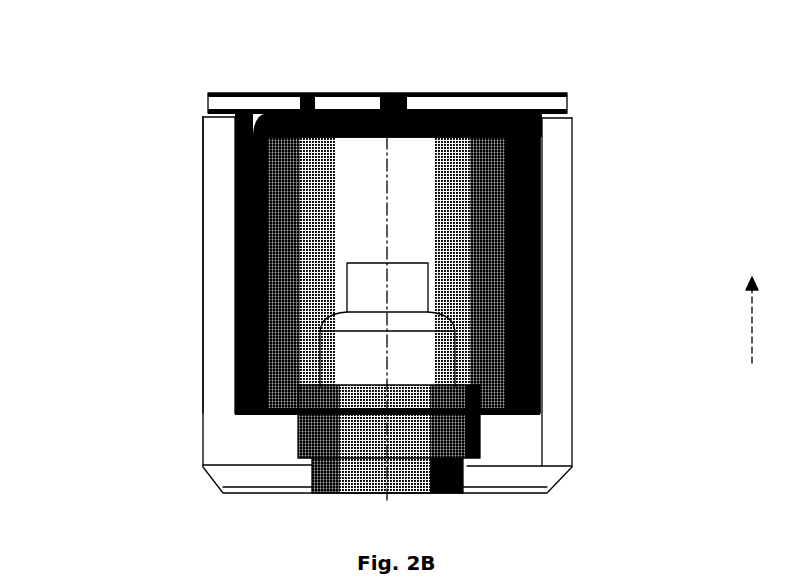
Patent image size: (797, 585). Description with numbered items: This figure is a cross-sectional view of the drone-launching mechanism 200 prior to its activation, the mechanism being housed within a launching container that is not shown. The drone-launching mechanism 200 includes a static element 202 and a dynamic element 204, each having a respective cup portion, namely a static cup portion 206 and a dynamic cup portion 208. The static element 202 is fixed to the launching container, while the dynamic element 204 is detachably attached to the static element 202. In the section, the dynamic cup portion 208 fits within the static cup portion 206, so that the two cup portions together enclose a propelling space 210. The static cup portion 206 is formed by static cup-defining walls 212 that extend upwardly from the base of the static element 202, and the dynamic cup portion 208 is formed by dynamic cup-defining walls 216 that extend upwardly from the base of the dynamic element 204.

The drone-launching mechanism 200 is at (391, 271).
The static element 202 is at (565, 317).
The dynamic element 204 is at (490, 104).
The static cup portion 206 is at (538, 360).
The dynamic cup portion 208 is at (218, 182).
The propelling space 210 is at (497, 230).
The static cup-defining walls 212 is at (212, 256).
The dynamic cup-defining walls 216 is at (535, 168).